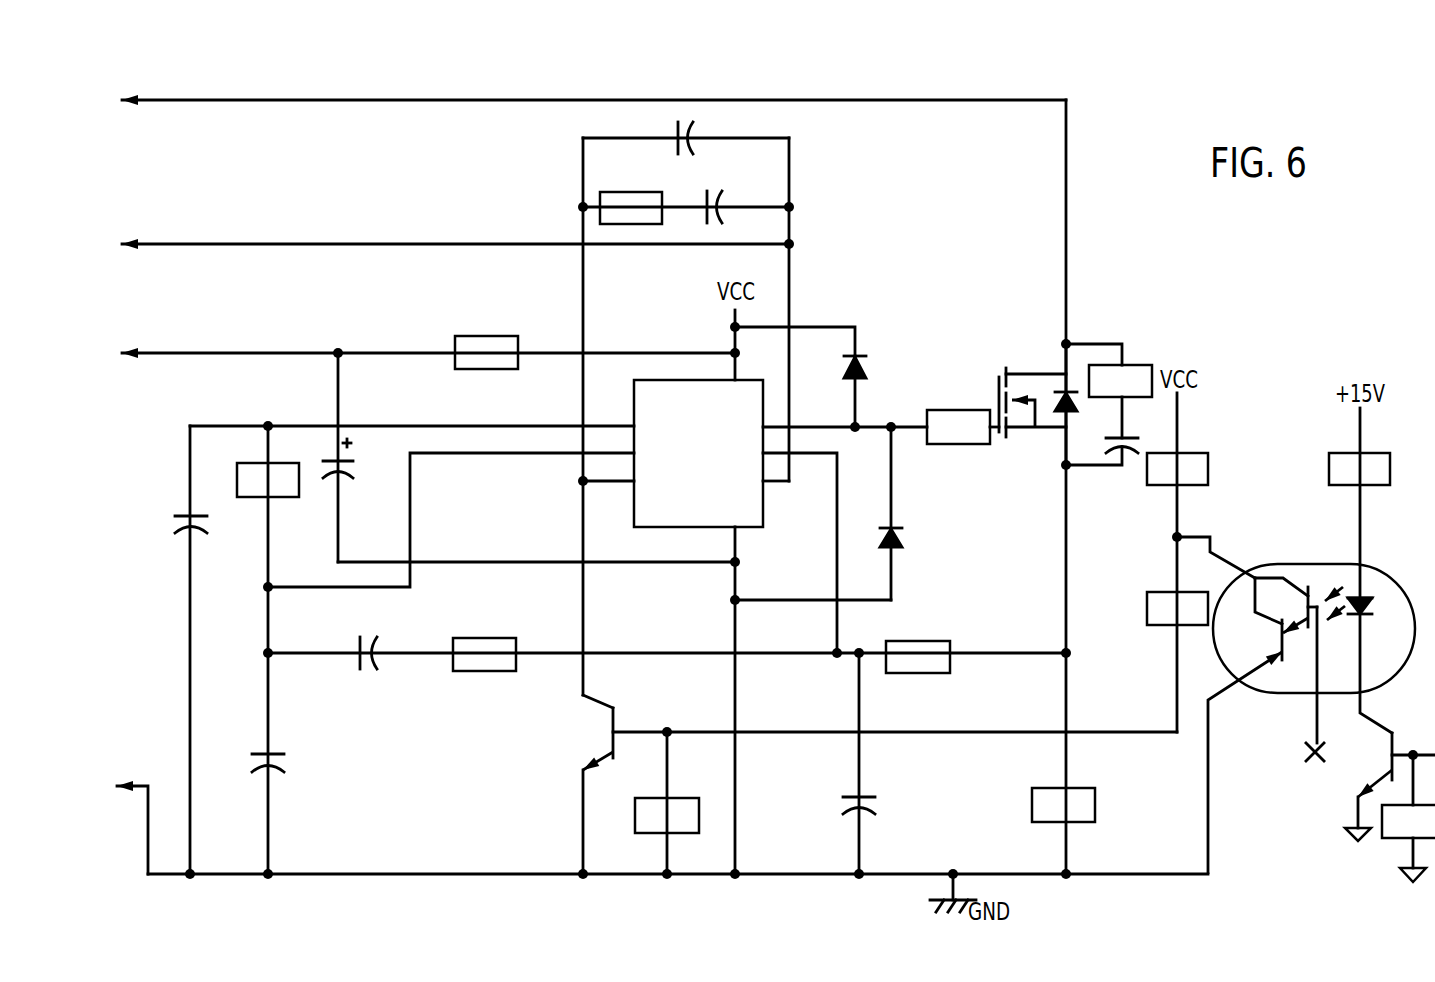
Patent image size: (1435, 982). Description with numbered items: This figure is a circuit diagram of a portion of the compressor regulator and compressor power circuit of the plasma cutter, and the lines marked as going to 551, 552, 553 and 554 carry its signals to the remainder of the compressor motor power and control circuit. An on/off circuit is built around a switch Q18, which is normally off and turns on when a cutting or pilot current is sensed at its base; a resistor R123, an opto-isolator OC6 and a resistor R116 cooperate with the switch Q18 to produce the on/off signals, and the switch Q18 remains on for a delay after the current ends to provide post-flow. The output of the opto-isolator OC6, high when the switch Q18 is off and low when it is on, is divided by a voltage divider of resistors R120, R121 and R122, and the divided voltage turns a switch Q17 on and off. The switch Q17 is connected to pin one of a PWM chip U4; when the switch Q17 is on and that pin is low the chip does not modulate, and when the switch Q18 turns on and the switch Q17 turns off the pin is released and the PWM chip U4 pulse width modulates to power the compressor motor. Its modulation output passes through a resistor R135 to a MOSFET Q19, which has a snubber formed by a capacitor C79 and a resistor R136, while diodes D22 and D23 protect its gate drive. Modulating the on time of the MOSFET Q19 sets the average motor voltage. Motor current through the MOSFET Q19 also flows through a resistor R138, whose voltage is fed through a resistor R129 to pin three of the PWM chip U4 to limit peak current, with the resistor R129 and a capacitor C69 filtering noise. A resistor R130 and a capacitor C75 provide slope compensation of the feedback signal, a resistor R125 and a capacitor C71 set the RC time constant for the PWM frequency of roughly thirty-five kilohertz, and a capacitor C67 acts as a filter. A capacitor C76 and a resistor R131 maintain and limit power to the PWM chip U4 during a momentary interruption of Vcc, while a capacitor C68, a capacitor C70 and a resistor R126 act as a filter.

The connection to node 551 is at (594, 472).
The connection to node 552 is at (455, 229).
The connection to node 553 is at (428, 338).
The connection to node 554 is at (143, 814).
The capacitor C68 is at (684, 152).
The resistor R126 is at (631, 208).
The capacitor C70 is at (736, 202).
The resistor R131 is at (486, 352).
The PWM chip U4 is at (699, 451).
The diode D22 is at (833, 391).
The diode D23 is at (911, 513).
The resistor R135 is at (958, 427).
The MOSFET Q19 is at (1054, 404).
The resistor R136 is at (1120, 381).
The capacitor C79 is at (1135, 425).
The resistor R120 is at (1177, 469).
The resistor R122 is at (1177, 608).
The resistor R116 is at (1359, 469).
The resistor R125 is at (268, 480).
The capacitor C76 is at (351, 472).
The capacitor C67 is at (177, 538).
The capacitor C71 is at (288, 765).
The capacitor C75 is at (388, 663).
The resistor R130 is at (484, 654).
The resistor R129 is at (918, 657).
The switch Q17 is at (585, 732).
The resistor R121 is at (667, 815).
The capacitor C69 is at (879, 806).
The resistor R138 is at (1063, 805).
The opto-isolator OC6 is at (1298, 648).
The switch Q18 is at (1369, 787).
The resistor R123 is at (1393, 818).